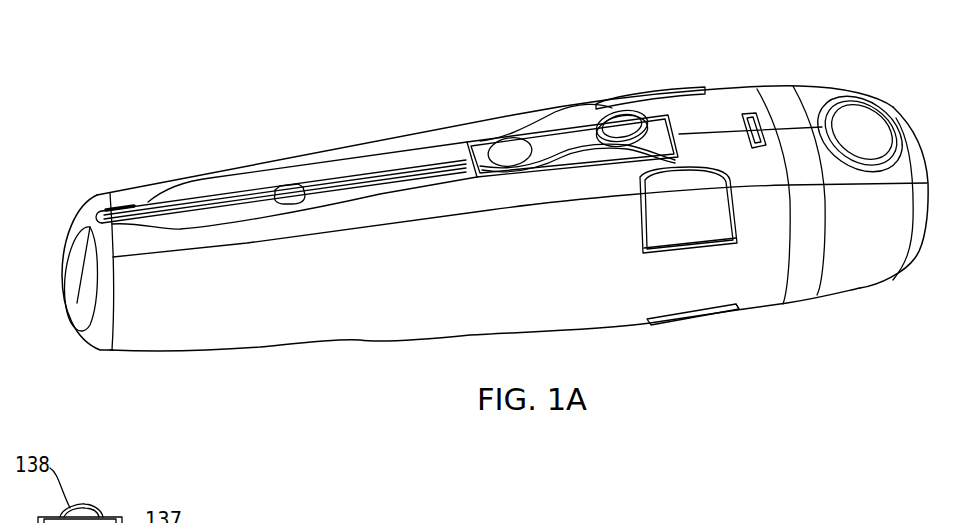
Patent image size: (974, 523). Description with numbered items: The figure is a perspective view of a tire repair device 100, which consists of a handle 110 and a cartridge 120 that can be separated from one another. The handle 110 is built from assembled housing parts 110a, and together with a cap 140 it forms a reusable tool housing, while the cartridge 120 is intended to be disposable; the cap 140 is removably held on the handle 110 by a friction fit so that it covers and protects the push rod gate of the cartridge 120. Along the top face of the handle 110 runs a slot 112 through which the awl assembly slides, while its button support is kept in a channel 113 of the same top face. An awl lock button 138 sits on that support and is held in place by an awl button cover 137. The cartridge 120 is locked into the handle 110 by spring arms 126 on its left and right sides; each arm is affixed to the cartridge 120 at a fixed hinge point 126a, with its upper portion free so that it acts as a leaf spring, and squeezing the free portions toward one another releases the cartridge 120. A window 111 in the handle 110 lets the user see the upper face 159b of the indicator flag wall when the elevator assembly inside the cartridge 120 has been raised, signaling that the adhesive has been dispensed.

The tire repair device 100 is at (203, 126).
The handle 110 is at (357, 341).
The housing parts 110a is at (117, 193).
The window 111 is at (747, 113).
The slot 112 is at (387, 180).
The channel 113 is at (305, 177).
The cartridge 120 is at (698, 323).
The spring arms 126 is at (672, 95).
The fixed hinge point 126a is at (718, 316).
The awl button cover 137 is at (547, 127).
The awl lock button 138 is at (626, 124).
The cap 140 is at (869, 287).
The upper face of indicator flag wall 159b is at (744, 130).